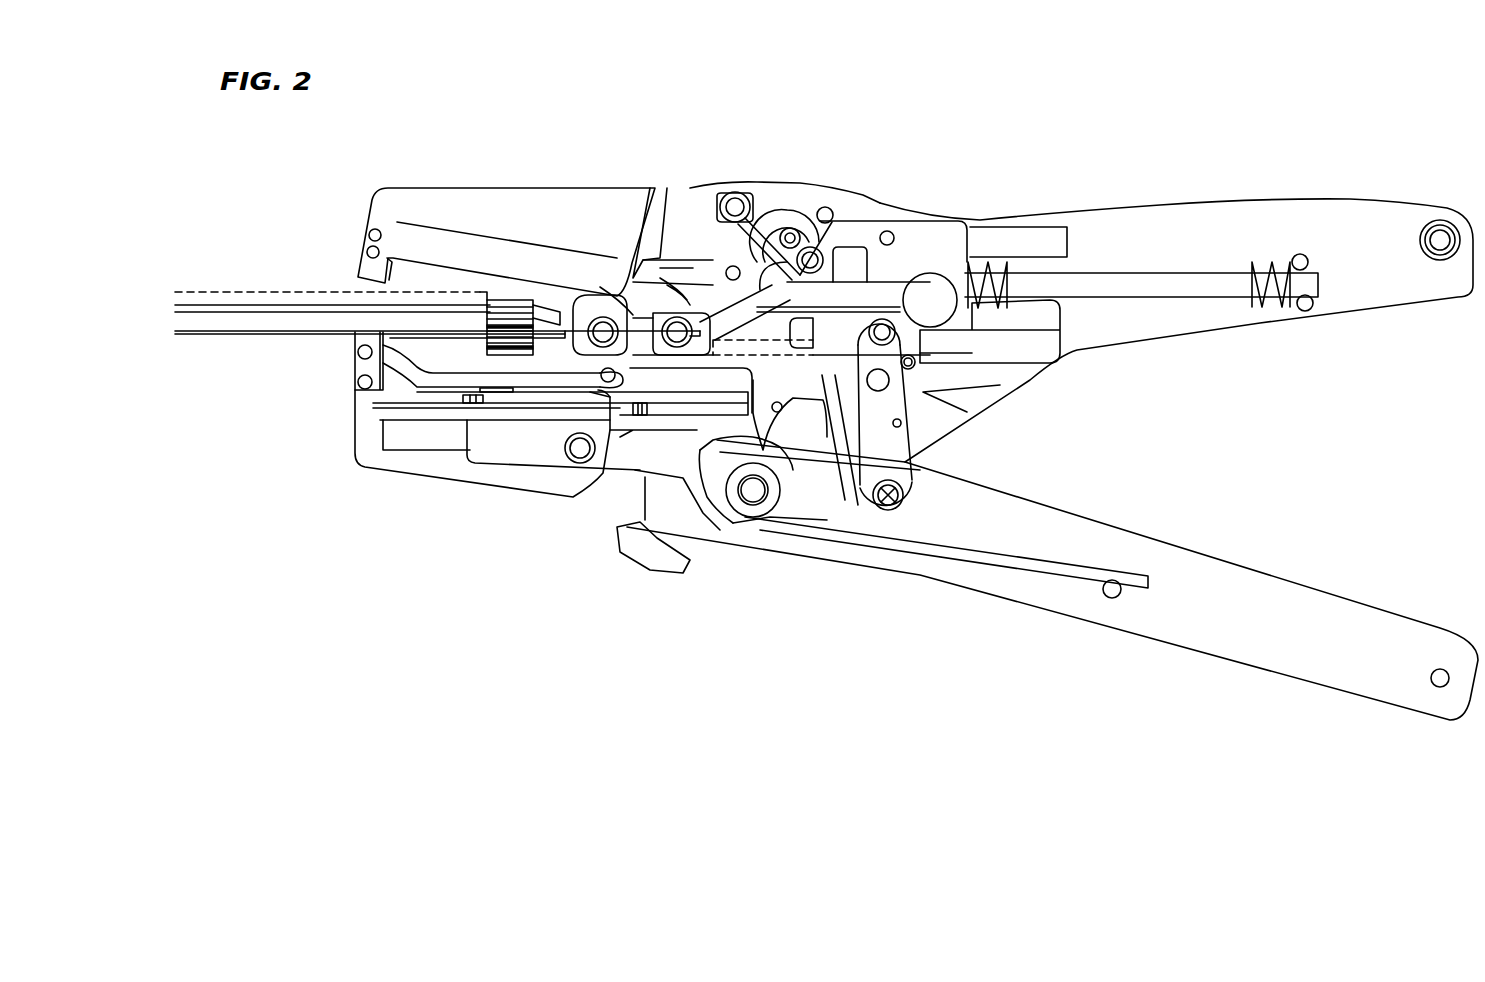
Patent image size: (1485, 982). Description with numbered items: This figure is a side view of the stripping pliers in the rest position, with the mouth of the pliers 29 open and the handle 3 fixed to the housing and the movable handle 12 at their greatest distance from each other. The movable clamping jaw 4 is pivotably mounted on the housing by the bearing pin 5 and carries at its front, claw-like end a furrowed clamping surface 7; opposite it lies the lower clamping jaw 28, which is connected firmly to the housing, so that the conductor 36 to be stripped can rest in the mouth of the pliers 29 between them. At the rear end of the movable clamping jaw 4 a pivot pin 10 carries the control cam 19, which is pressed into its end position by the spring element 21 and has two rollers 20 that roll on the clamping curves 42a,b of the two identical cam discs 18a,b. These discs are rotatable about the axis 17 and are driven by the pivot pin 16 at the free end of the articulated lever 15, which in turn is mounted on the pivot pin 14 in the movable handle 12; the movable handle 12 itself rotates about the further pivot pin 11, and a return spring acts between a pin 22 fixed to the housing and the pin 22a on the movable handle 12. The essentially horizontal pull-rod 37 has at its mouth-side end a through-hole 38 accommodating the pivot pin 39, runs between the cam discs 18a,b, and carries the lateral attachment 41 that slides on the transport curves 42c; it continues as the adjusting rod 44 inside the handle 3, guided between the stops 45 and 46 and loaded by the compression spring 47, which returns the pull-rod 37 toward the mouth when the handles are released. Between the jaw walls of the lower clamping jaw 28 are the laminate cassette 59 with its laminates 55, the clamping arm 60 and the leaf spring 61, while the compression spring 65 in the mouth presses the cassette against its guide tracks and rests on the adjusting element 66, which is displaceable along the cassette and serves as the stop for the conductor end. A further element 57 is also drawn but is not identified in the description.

The handle 3 is at (1353, 222).
The movable clamping jaw 4 is at (425, 200).
The bearing pin 5 is at (656, 250).
The clamping surface 7 is at (1075, 585).
The pivot pin 10 is at (790, 230).
The further pivot pin 11 is at (752, 503).
The movable handle 12 is at (1400, 632).
The pivot pin 14 is at (890, 510).
The articulated lever 15 is at (893, 440).
The pivot pin 16 is at (905, 388).
The axis 17 is at (912, 370).
The cam discs 18a,b is at (838, 380).
The control cam 19 is at (812, 248).
The rollers 20 is at (830, 208).
The spring element 21 is at (743, 200).
The pin 22 is at (790, 520).
The pin 22a is at (1112, 598).
The lower clamping jaw 28 is at (377, 420).
The mouth of the pliers 29 is at (342, 272).
The conductor 36 is at (220, 300).
The pull-rod 37 is at (720, 250).
The through-hole 38 is at (670, 317).
The pivot pin 39 is at (600, 317).
The lateral attachment 41 is at (935, 290).
The clamping curves 42a,b is at (700, 540).
The transport curves 42c is at (892, 230).
The adjusting rod 44 is at (1233, 283).
The stop 45 is at (1310, 262).
The stop 46 is at (1306, 311).
The compression spring 47 is at (1280, 285).
The laminates 55 is at (452, 385).
The pivot 57 is at (573, 462).
The laminate cassette 59 is at (362, 403).
The clamping arm 60 is at (530, 455).
The leaf spring 61 is at (365, 425).
The compression spring 65 is at (490, 300).
The adjusting element 66 is at (490, 420).